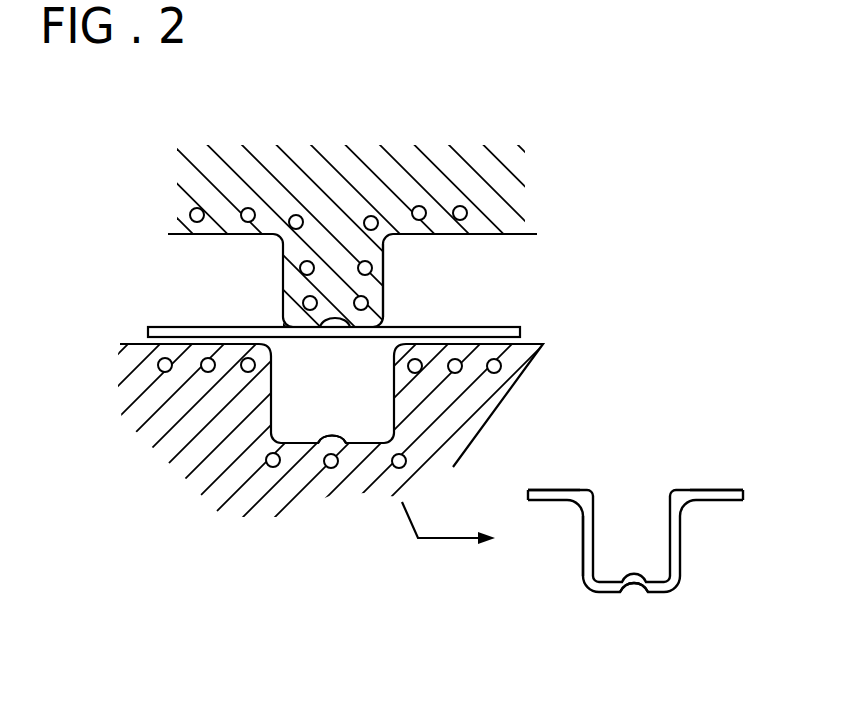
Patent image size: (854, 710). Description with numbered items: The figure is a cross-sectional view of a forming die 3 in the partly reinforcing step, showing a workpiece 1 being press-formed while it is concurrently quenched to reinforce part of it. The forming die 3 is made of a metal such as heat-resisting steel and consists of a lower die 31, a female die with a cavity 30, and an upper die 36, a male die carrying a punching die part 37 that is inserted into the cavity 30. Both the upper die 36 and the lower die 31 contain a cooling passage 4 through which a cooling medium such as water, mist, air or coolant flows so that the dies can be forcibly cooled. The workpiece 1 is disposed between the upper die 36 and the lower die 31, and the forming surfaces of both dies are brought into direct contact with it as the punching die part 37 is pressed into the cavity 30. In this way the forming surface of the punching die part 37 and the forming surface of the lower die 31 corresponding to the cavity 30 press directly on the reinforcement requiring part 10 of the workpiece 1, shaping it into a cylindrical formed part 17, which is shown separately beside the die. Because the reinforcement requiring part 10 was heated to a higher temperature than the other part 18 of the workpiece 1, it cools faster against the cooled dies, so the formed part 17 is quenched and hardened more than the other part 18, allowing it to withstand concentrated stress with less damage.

The workpiece 1 is at (497, 321).
The forming die 3 is at (526, 199).
The cooling passage 4 is at (296, 215).
The reinforcement requiring part 10 is at (331, 337).
The formed part 17 is at (590, 562).
The other part 18 is at (192, 332).
The cavity 30 is at (370, 436).
The lower die 31 is at (513, 383).
The upper die 36 is at (482, 235).
The punching die part 37 is at (386, 281).